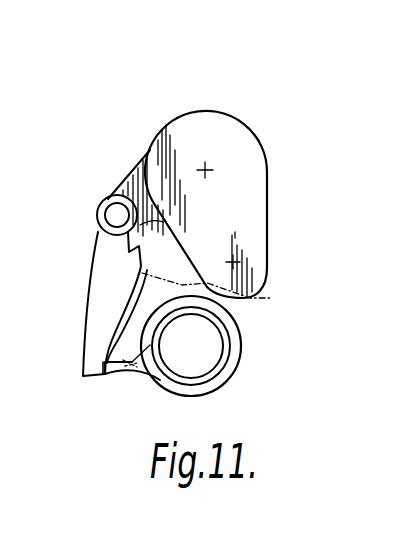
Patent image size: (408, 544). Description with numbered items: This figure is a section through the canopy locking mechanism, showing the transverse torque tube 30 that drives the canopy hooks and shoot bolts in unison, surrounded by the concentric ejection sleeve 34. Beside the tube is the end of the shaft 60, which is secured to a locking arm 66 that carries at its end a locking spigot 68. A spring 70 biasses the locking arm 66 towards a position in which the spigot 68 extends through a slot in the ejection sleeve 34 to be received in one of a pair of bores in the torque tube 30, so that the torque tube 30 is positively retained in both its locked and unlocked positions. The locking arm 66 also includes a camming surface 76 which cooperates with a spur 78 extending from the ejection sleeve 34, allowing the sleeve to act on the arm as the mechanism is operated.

The torque tube 30 is at (212, 362).
The ejection sleeve 34 is at (241, 338).
The shaft 60 is at (114, 216).
The locking arm 66 is at (83, 348).
The locking spigot 68 is at (97, 362).
The spring 70 is at (122, 190).
The camming surface 76 is at (117, 320).
The spur 78 is at (219, 214).